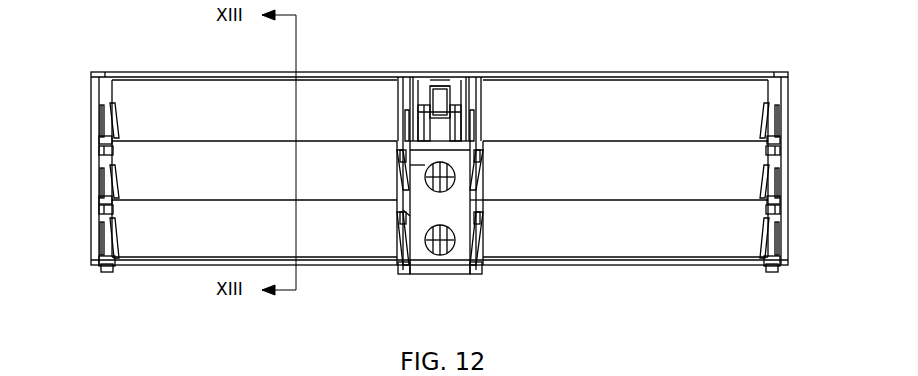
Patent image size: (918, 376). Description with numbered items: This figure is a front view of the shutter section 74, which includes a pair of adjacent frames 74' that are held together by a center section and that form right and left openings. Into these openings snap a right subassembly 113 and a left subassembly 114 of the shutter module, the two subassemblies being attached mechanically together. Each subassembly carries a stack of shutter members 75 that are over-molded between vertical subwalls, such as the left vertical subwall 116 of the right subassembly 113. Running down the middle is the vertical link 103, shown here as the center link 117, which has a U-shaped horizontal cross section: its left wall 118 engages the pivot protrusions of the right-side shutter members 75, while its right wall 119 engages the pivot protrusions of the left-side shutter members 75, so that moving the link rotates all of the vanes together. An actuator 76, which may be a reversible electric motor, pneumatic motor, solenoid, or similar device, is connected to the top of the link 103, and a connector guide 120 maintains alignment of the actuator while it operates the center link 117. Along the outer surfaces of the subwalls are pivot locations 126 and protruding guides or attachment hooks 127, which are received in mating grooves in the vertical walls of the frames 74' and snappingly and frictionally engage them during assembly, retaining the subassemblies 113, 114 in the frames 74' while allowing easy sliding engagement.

The shutter section 74 is at (80, 16).
The frame 74' is at (439, 152).
The shutter member 75 is at (440, 168).
The actuator 76 is at (446, 70).
The vertical link 103 is at (437, 285).
The right subassembly 113 is at (400, 283).
The left subassembly 114 is at (770, 281).
The left vertical subwall 116 is at (403, 94).
The center link 117 is at (425, 165).
The left wall 118 is at (403, 212).
The right wall 119 is at (476, 200).
The connector guide 120 is at (432, 86).
The pivot location 126 is at (100, 118).
The guide/attachment hook 127 is at (99, 150).